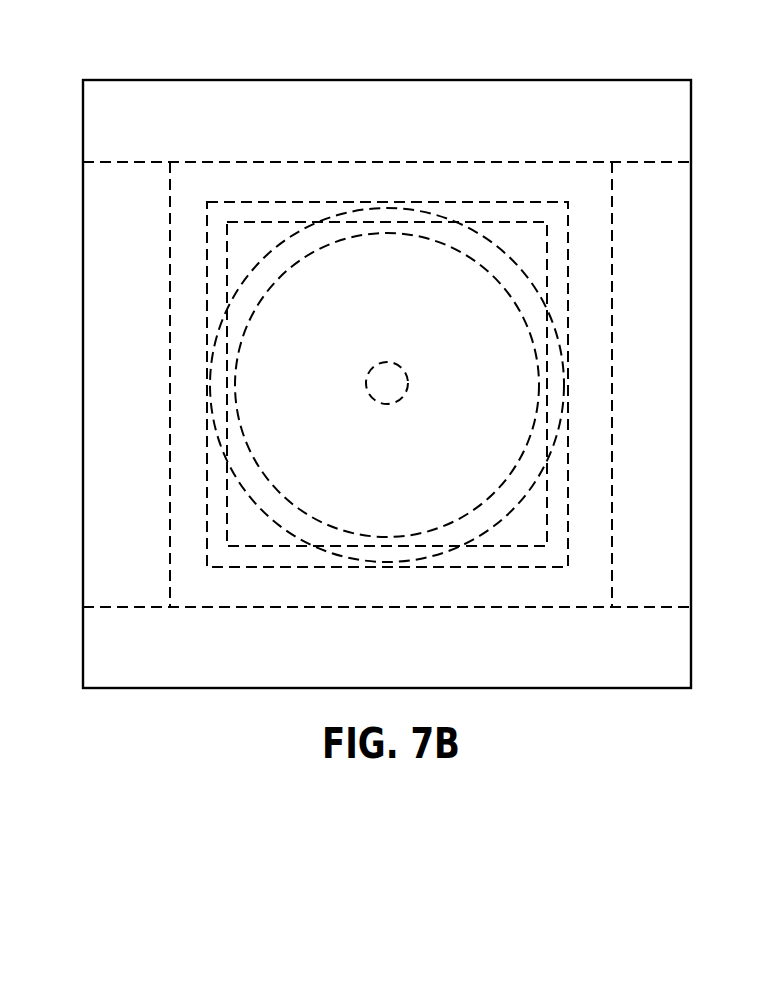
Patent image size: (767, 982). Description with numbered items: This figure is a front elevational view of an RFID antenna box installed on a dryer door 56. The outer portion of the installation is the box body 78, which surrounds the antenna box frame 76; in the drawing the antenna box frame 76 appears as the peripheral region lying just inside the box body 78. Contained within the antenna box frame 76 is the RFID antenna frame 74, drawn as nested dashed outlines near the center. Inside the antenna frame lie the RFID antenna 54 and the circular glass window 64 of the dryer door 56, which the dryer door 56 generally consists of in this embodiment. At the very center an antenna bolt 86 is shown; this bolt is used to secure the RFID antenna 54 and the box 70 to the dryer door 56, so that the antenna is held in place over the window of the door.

The dryer door 56 is at (110, 714).
The box 70 is at (116, 76).
The box body 78 is at (83, 141).
The antenna box frame 76 is at (537, 139).
The RFID antenna frame 74 is at (207, 212).
The glass window 64 is at (467, 469).
The RFID antenna 54 is at (272, 483).
The antenna bolt 86 is at (363, 378).